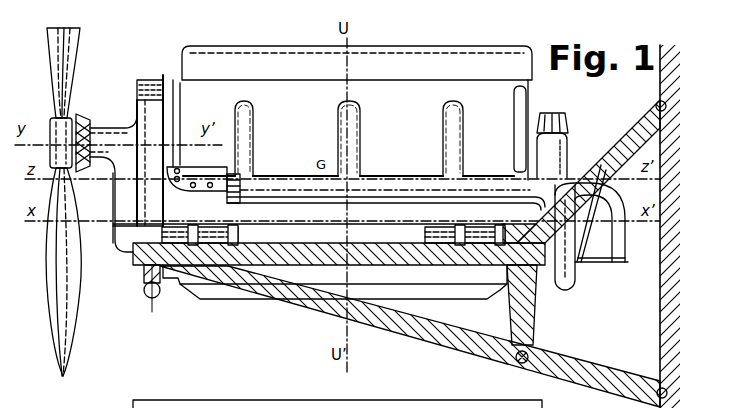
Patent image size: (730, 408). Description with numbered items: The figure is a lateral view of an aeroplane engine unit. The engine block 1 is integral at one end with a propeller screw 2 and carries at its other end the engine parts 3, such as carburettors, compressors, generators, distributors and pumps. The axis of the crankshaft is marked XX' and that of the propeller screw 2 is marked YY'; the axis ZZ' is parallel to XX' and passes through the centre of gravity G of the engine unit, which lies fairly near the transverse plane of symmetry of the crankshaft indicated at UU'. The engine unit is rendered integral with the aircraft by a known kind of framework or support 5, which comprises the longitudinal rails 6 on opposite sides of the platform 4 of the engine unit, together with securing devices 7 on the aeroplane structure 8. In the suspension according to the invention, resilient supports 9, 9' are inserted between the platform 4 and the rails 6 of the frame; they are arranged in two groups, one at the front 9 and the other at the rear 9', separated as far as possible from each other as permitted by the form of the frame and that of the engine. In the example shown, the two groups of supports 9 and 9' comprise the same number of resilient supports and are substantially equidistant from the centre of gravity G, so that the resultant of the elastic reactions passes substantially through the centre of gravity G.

The engine block 1 is at (418, 93).
The propeller screw 2 is at (70, 82).
The engine parts 3 is at (618, 238).
The platform 4 is at (378, 224).
The framework 5 is at (364, 308).
The longitudinal rails 6 is at (145, 275).
The securing devices 7 is at (665, 386).
The aeroplane structure 8 is at (665, 276).
The resilient supports 9 is at (200, 220).
The resilient supports 9' is at (465, 223).